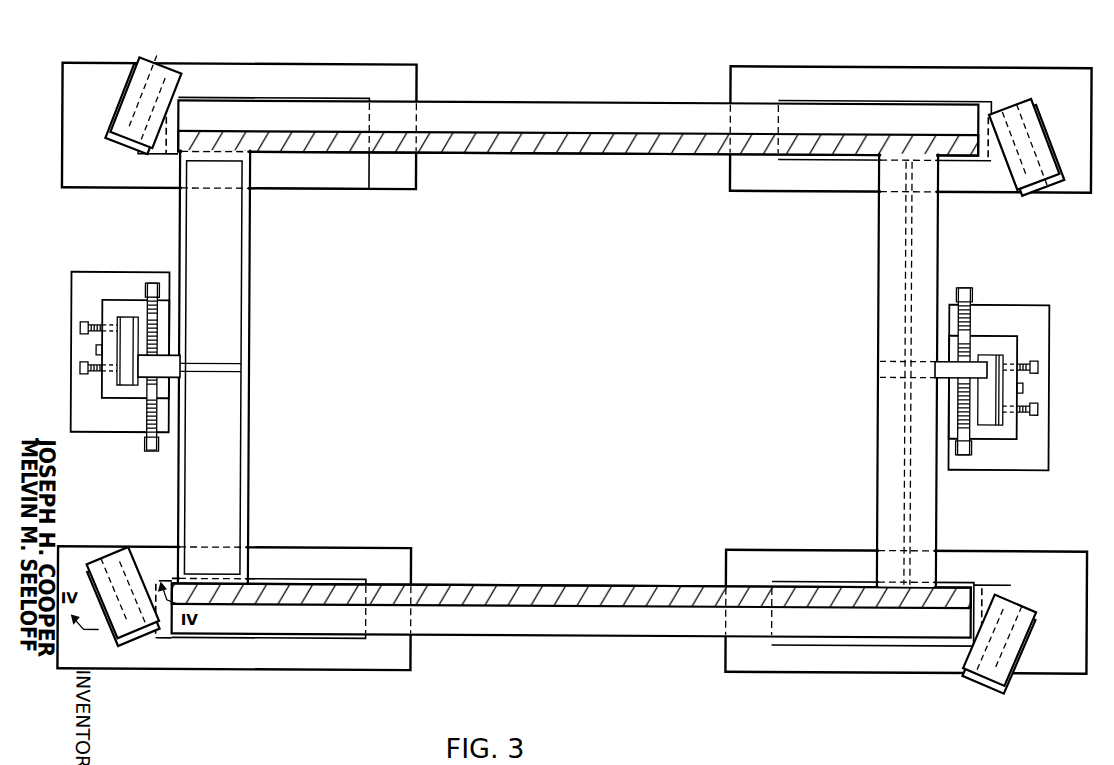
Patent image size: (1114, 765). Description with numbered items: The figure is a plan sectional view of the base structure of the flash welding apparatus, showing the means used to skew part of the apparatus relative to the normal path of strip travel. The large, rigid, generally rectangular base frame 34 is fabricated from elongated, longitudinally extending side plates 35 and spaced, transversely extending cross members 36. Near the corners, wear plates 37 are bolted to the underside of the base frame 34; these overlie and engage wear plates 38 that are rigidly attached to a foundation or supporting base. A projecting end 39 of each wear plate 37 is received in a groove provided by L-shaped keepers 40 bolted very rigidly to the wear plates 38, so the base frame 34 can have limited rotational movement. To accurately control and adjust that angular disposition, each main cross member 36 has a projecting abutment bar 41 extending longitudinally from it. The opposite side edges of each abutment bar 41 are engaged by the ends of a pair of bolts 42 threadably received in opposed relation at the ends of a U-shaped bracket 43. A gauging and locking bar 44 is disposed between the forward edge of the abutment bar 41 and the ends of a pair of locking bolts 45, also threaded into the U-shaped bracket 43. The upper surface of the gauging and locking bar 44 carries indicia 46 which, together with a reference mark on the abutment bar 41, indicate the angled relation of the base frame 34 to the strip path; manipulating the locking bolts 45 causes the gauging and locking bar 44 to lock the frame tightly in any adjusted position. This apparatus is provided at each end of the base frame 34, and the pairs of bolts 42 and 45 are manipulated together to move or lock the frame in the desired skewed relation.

The base frame 34 is at (598, 145).
The side plates 35 is at (606, 598).
The cross members 36 is at (224, 319).
The wear plates 37 is at (330, 99).
The wear plates 38 is at (927, 80).
The projecting end 39 is at (136, 150).
The L-shaped keepers 40 is at (1046, 614).
The abutment bar 41 is at (158, 366).
The bolts 42 is at (151, 283).
The U-shaped bracket 43 is at (110, 312).
The gauging and locking bar 44 is at (985, 360).
The locking bolts 45 is at (80, 328).
The indicia 46 is at (133, 340).